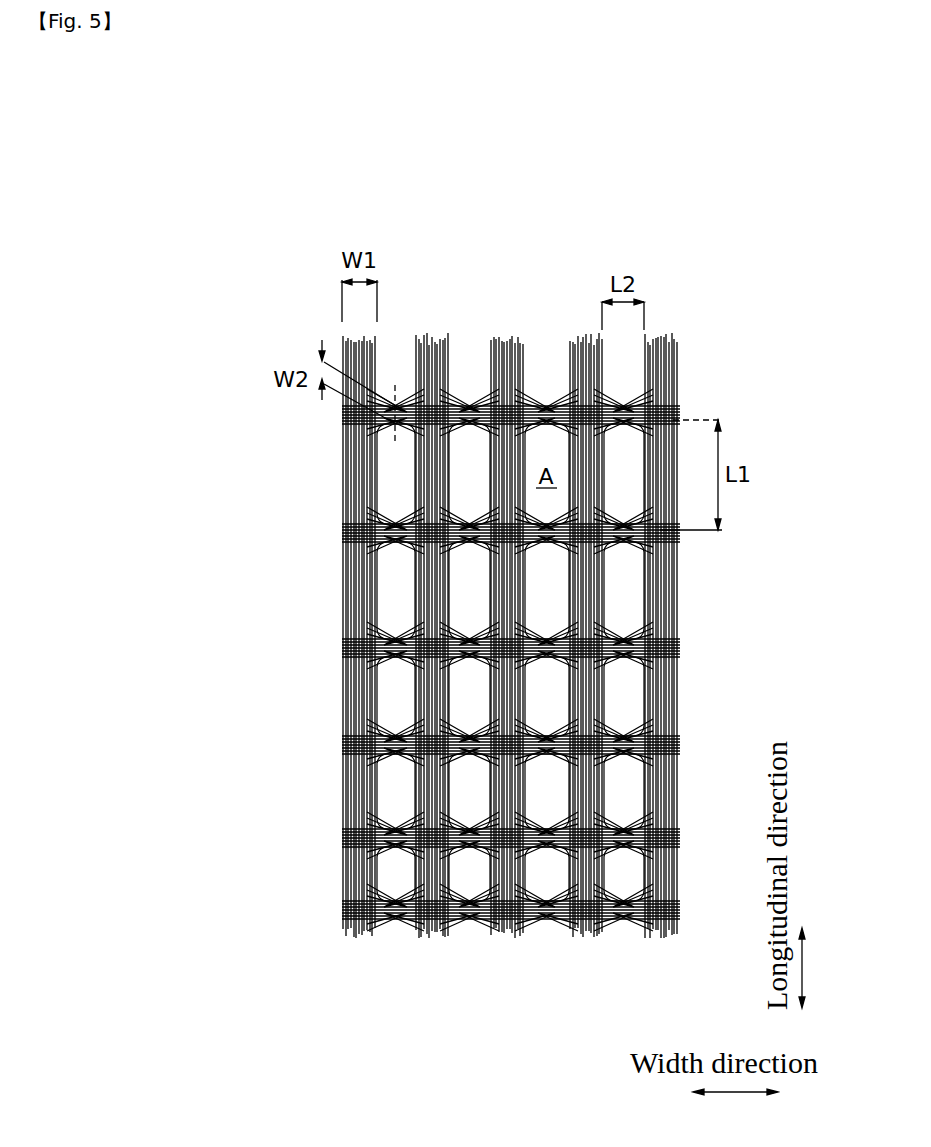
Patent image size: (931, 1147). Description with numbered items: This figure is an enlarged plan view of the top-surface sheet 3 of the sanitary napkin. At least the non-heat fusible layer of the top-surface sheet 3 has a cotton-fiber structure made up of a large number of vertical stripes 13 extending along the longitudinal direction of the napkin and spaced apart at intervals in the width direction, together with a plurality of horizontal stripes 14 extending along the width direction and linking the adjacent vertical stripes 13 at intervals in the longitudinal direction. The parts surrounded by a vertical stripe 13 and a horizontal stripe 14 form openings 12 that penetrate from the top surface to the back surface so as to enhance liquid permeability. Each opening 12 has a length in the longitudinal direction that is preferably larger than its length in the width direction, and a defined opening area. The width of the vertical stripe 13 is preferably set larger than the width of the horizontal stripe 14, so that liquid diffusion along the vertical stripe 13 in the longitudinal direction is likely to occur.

The top-surface sheet 3 is at (510, 605).
The opening 12 is at (631, 443).
The vertical stripe 13 is at (343, 582).
The horizontal stripe 14 is at (467, 412).